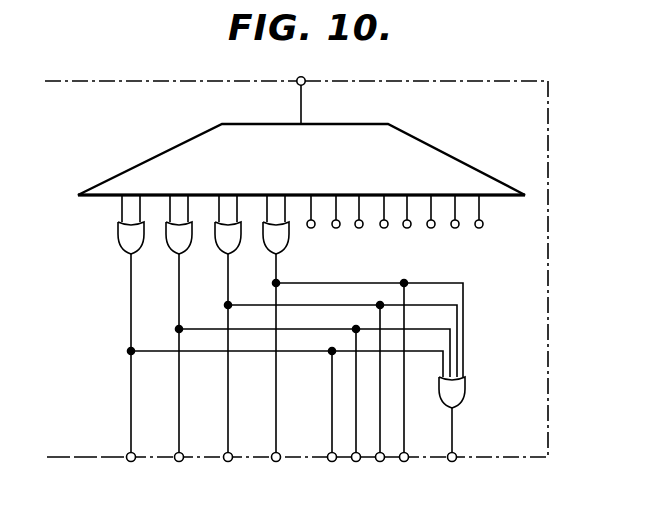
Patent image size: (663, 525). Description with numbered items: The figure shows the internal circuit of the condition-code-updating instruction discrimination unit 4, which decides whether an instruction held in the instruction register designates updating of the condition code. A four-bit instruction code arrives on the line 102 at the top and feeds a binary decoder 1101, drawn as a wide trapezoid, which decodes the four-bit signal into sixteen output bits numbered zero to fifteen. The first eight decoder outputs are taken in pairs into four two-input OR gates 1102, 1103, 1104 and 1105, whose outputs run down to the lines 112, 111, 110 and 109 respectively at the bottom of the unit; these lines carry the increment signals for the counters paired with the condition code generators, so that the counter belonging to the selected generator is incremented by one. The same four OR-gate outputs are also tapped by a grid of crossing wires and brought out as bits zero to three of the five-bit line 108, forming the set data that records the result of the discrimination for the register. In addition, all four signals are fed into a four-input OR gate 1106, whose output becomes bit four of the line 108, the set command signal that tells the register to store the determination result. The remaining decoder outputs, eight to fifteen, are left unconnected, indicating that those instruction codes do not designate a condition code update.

The condition-code-updating instruction discrimination unit 4 is at (551, 246).
The line 102 is at (305, 77).
The 5-bit line 108 is at (325, 468).
The line 109 is at (278, 462).
The line 110 is at (225, 462).
The line 111 is at (181, 462).
The line 112 is at (126, 461).
The binary decoder 1101 is at (449, 157).
The 2-input OR gate 1102 is at (135, 254).
The 2-input OR gate 1103 is at (183, 253).
The 2-input OR gate 1104 is at (232, 254).
The 2-input OR gate 1105 is at (281, 252).
The 4-input OR gate 1106 is at (466, 390).